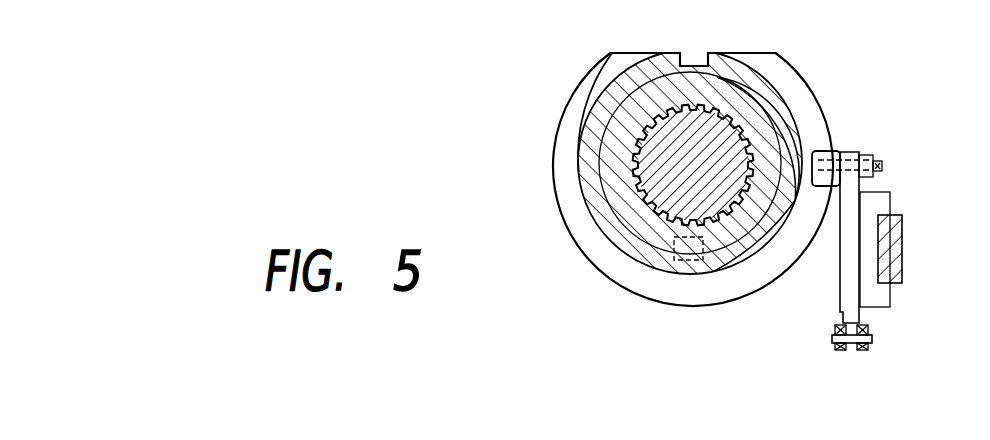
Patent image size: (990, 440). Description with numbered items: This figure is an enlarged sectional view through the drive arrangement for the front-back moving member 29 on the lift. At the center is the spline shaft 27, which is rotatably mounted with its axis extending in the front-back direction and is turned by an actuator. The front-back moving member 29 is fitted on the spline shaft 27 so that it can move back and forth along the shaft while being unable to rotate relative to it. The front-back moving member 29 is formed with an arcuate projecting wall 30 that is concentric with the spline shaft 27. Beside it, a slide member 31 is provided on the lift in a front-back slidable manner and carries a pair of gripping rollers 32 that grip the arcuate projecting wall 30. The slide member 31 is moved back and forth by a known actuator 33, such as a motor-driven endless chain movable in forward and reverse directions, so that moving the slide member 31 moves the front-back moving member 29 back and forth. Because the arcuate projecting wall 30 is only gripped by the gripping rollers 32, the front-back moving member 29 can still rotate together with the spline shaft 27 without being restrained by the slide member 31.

The spline shaft 27 is at (667, 145).
The front-back moving member 29 is at (733, 110).
The arcuate projecting wall 30 is at (568, 157).
The slide member 31 is at (878, 203).
The gripping rollers 32 is at (830, 158).
The actuator 33 is at (873, 328).